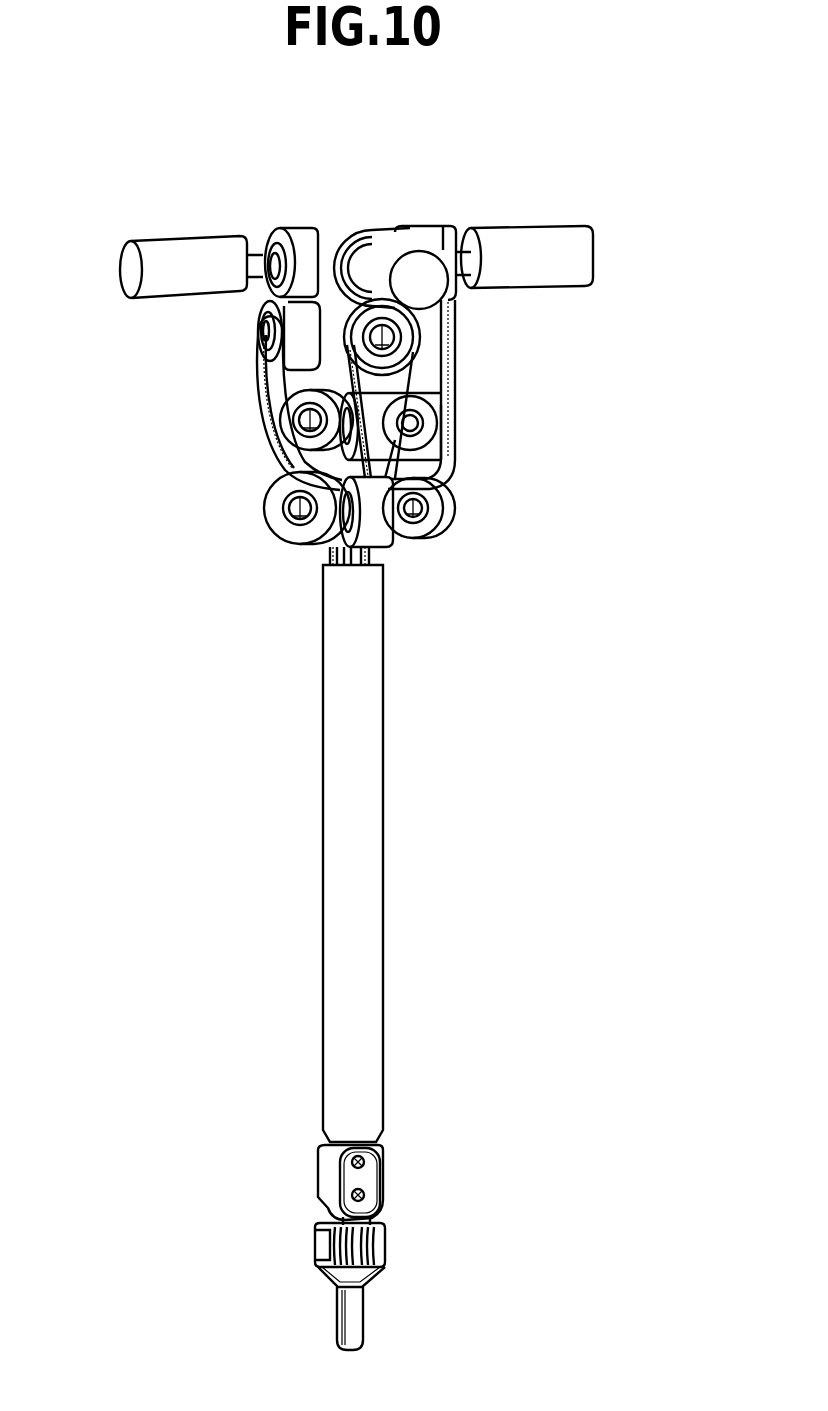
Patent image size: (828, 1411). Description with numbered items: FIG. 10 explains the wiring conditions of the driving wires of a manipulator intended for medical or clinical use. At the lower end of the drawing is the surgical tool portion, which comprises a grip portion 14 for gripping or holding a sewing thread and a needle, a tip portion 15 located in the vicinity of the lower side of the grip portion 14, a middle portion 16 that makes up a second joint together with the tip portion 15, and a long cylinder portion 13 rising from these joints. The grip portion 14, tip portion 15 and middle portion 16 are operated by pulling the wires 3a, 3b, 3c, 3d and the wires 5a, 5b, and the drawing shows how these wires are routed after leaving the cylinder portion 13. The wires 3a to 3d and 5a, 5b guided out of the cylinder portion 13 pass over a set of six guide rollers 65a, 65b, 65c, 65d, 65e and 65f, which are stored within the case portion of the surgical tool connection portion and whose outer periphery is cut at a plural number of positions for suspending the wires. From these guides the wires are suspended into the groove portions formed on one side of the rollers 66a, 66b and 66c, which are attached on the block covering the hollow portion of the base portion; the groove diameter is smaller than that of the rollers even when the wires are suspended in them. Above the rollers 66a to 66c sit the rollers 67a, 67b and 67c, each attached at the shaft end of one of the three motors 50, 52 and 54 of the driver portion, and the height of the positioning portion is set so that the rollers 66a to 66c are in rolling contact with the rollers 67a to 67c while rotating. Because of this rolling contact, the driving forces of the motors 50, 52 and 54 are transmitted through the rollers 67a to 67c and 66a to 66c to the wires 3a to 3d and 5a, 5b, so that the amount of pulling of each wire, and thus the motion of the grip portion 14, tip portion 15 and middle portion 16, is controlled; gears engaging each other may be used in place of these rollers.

The motor 52 is at (152, 252).
The roller 67a is at (295, 240).
The motor 54 is at (372, 258).
The roller 67b is at (367, 240).
The roller 67c is at (443, 222).
The motor 50 is at (583, 252).
The roller 66a is at (262, 332).
The roller 66b is at (440, 343).
The roller 66c is at (440, 320).
The wire 3a is at (255, 372).
The wire 3b is at (258, 395).
The wire 3c is at (453, 392).
The wire 3d is at (453, 377).
The roller 65a is at (258, 507).
The roller 65b is at (258, 438).
The roller 65c is at (417, 530).
The roller 65d is at (443, 515).
The roller 65e is at (435, 513).
The roller 65f is at (453, 423).
The wire 5a is at (447, 413).
The wire 5b is at (432, 462).
The cylinder portion 13 is at (372, 880).
The middle portion 16 is at (385, 1160).
The tip portion 15 is at (375, 1225).
The grip portion 14 is at (365, 1310).